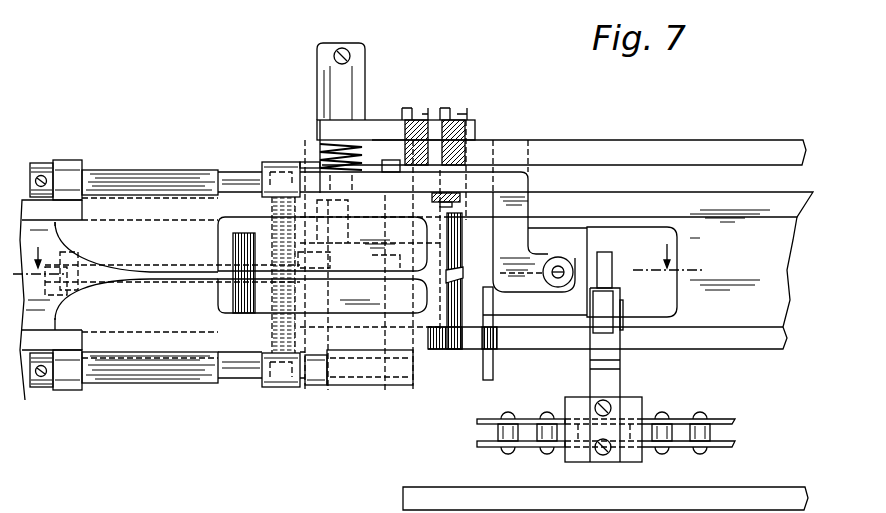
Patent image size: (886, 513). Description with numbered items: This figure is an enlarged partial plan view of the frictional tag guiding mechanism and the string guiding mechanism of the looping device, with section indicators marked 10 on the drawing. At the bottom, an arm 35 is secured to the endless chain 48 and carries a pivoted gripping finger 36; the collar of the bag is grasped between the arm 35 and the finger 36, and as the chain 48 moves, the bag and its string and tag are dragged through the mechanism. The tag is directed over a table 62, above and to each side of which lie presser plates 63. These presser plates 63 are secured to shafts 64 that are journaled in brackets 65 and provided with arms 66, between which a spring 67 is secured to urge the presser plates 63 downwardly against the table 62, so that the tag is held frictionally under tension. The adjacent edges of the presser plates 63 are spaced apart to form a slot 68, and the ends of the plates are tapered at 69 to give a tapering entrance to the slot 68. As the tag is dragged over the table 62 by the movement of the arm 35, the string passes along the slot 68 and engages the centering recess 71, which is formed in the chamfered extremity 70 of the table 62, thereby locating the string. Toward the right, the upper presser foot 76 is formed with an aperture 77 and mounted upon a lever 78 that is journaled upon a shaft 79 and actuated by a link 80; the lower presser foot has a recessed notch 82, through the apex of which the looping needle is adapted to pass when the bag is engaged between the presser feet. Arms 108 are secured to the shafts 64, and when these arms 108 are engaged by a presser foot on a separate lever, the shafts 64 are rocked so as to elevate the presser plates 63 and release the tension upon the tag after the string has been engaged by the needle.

The section line indicator 10 is at (351, 247).
The arm 35 is at (612, 384).
The pivoted gripping finger 36 is at (606, 254).
The endless chain 48 is at (720, 420).
The table 62 is at (36, 318).
The presser plates 63 is at (157, 252).
The shafts 64 is at (232, 176).
The brackets 65 is at (66, 165).
The arms 66 is at (278, 164).
The spring 67 is at (268, 200).
The slot 68 is at (188, 276).
The tapered ends 69 is at (89, 258).
The chamfered extremity 70 is at (458, 290).
The centering recess 71 is at (447, 275).
The upper presser foot 76 is at (571, 259).
The aperture 77 is at (560, 262).
The lever 78 is at (416, 180).
The shaft 79 is at (350, 75).
The link 80 is at (453, 194).
The recessed notch 82 is at (488, 296).
The arms 108 is at (330, 382).